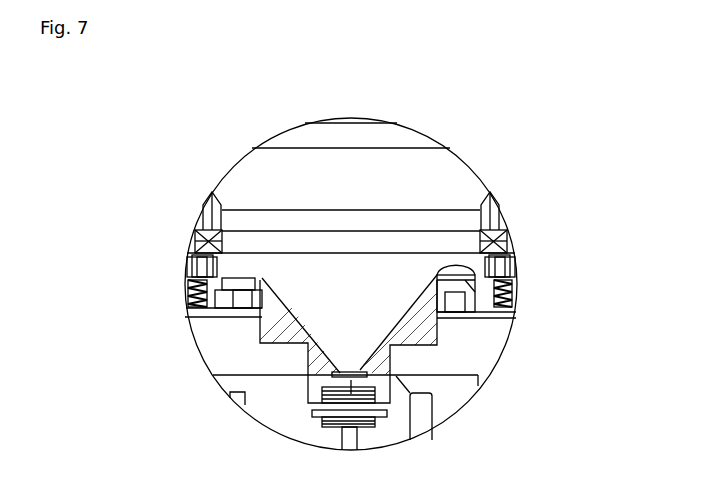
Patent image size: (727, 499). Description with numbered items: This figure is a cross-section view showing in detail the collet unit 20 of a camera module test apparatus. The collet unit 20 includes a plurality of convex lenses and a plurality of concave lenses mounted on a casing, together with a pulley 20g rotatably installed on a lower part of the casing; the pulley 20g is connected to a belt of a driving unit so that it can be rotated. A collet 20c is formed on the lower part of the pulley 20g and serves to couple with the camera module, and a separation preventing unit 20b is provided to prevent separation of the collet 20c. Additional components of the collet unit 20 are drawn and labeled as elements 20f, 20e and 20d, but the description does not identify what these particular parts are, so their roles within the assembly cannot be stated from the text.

The collet unit 20 is at (398, 258).
The pulley 20g is at (502, 210).
The spring 20f is at (187, 292).
The support plate 20e is at (190, 335).
The separation preventing unit 20b is at (512, 283).
The collet 20c is at (430, 350).
The stopper 20d is at (418, 432).